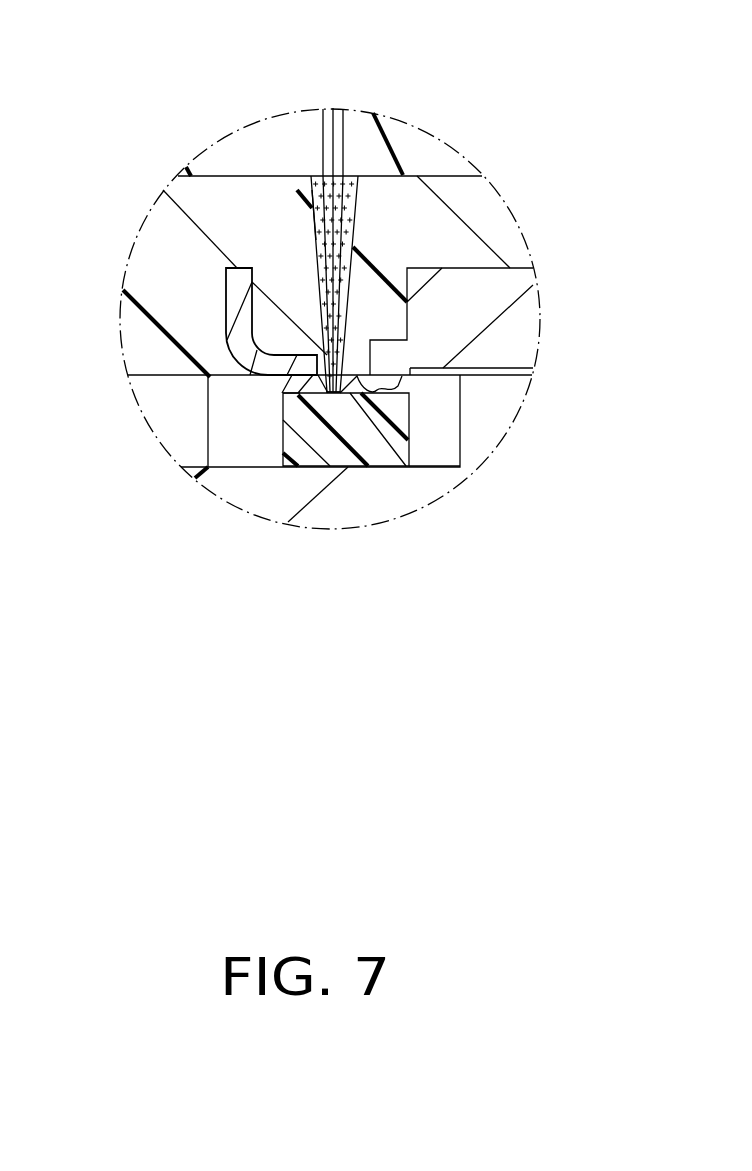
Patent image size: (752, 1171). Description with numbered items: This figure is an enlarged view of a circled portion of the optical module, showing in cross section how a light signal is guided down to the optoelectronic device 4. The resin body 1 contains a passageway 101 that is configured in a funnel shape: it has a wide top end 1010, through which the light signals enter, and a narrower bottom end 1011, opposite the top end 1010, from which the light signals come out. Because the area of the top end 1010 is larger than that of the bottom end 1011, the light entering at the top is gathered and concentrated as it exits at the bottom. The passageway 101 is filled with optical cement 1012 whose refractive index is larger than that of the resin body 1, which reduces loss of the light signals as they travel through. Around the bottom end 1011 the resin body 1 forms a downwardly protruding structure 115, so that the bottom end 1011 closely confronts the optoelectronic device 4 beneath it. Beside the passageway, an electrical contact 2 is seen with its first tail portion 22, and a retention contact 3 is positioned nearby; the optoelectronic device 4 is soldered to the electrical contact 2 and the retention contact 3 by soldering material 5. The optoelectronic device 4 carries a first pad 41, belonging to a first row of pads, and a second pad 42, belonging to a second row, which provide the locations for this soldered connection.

The resin body 1 is at (468, 205).
The passageway 101 is at (405, 176).
The top end 1010 is at (351, 176).
The bottom end 1011 is at (332, 394).
The optical cement 1012 is at (310, 222).
The electrical contact 2 is at (483, 298).
The first tail portion 22 is at (405, 371).
The retention contact 3 is at (240, 315).
The optoelectronic device 4 is at (323, 438).
The first pad 41 is at (303, 387).
The second pad 42 is at (398, 392).
The soldering material 5 is at (303, 383).
The downwardly protruding structure 115 is at (405, 467).